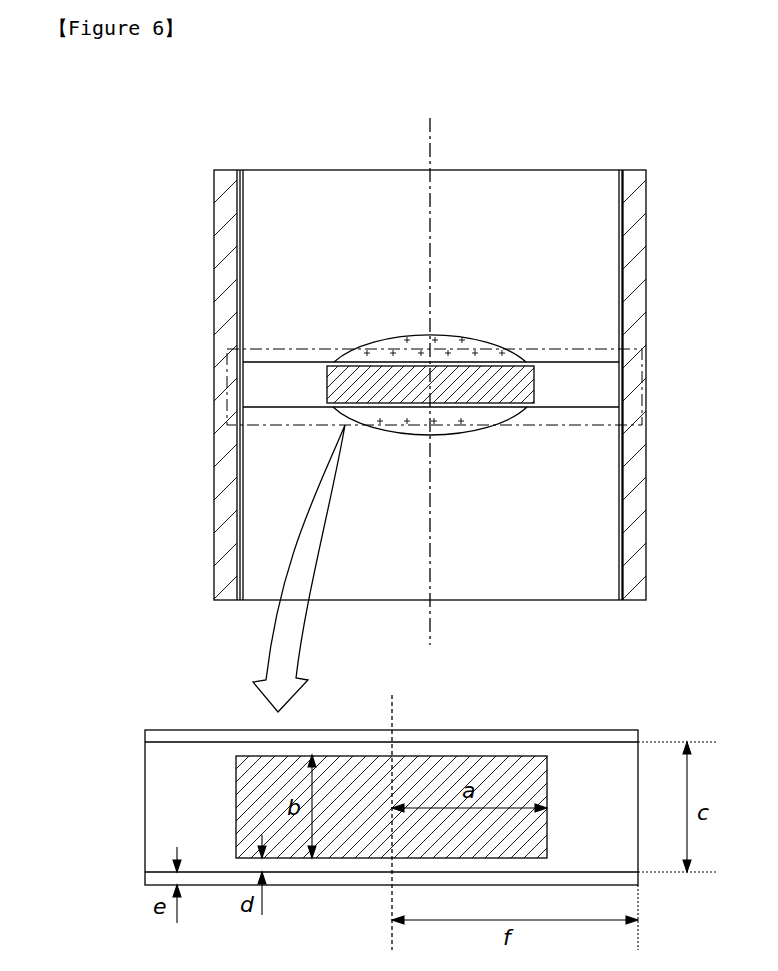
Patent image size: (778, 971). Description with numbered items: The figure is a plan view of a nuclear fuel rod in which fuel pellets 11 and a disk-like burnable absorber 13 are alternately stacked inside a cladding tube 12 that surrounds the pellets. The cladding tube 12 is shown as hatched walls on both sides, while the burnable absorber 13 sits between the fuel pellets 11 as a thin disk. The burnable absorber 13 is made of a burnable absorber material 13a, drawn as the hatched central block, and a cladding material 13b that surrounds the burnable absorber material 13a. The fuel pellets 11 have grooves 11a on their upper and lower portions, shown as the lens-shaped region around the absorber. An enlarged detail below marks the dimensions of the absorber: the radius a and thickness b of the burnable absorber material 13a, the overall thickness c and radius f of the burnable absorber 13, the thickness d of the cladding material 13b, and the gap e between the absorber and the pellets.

The fuel pellet 11 is at (541, 185).
The cladding tube 12 is at (634, 190).
The burnable absorber 13 is at (555, 360).
The groove 11a is at (488, 415).
The burnable absorber material 13a is at (530, 755).
The cladding material 13b is at (592, 765).